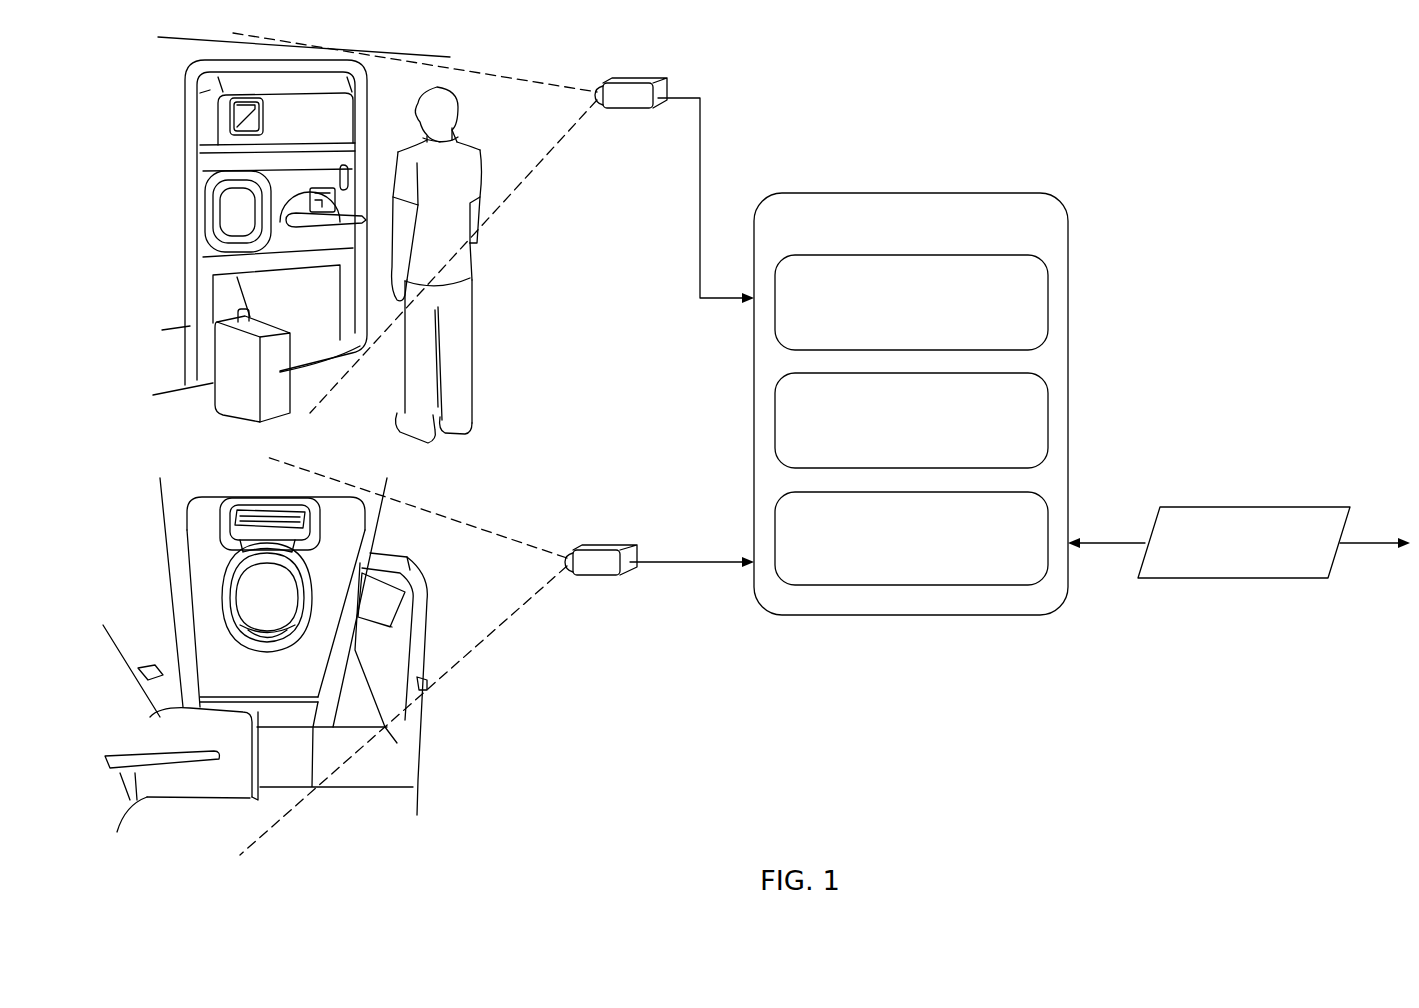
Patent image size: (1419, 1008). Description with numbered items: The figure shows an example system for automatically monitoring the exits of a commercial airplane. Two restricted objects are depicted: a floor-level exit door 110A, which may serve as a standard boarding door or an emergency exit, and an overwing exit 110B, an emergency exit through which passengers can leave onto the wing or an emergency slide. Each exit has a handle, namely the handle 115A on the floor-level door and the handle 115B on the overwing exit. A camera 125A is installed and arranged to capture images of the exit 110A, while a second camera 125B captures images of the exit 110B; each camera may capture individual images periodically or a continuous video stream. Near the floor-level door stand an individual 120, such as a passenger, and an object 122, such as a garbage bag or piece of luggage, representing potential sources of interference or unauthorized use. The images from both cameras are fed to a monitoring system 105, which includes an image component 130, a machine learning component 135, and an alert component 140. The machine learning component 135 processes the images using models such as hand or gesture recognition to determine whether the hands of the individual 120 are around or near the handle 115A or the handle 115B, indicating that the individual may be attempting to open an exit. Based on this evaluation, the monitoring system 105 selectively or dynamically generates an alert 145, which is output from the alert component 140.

The monitoring system 105 is at (985, 193).
The exit 110A is at (187, 153).
The exit 110B is at (187, 549).
The handle 115A is at (310, 224).
The handle 115B is at (240, 523).
The individual 120 is at (462, 157).
The object 122 is at (217, 330).
The camera 125A is at (638, 82).
The camera 125B is at (608, 547).
The image component 130 is at (1048, 290).
The machine learning component 135 is at (1048, 413).
The alert component 140 is at (1048, 517).
The alert 145 is at (1252, 507).